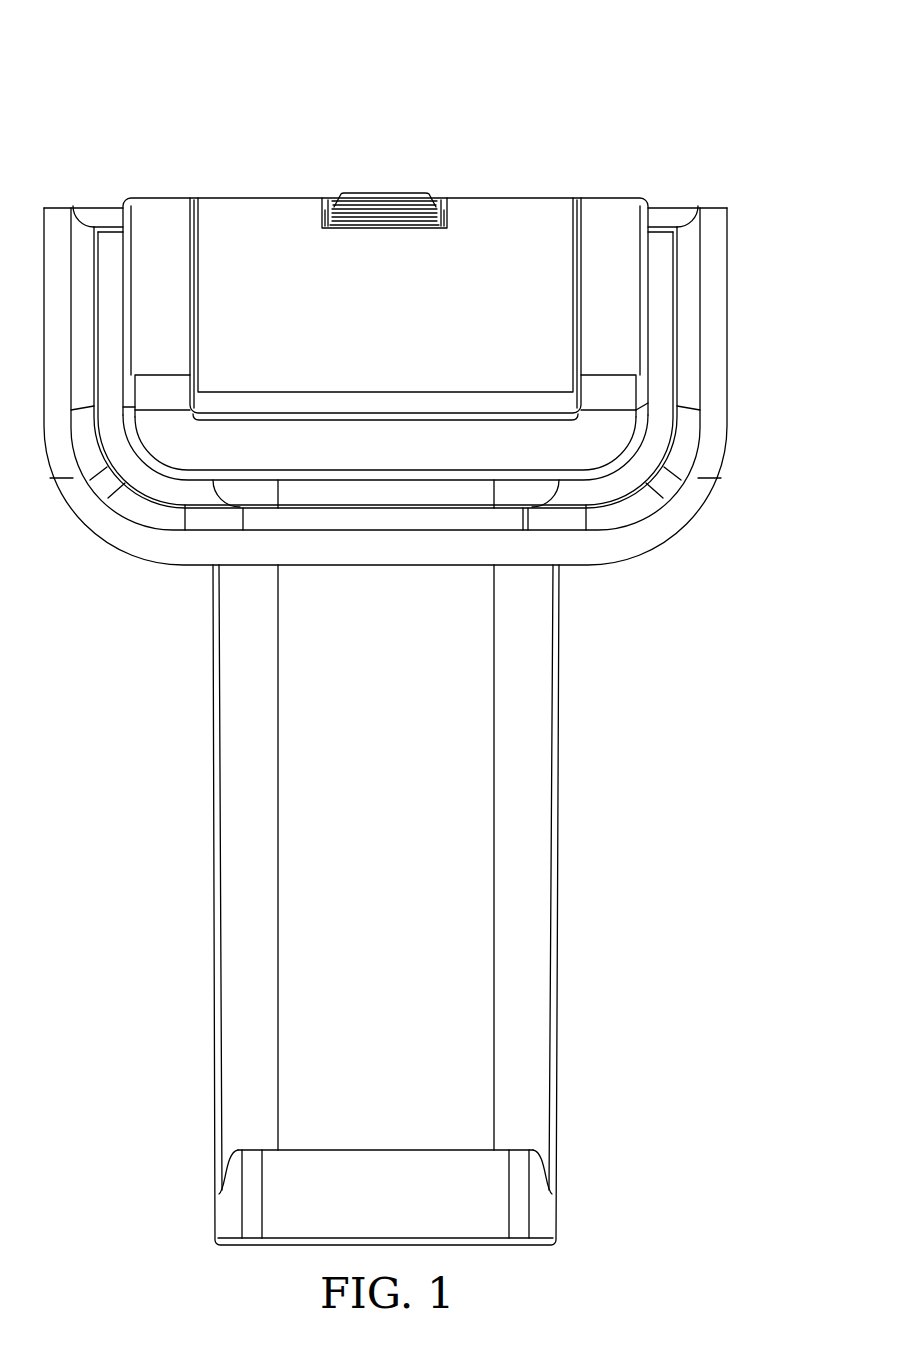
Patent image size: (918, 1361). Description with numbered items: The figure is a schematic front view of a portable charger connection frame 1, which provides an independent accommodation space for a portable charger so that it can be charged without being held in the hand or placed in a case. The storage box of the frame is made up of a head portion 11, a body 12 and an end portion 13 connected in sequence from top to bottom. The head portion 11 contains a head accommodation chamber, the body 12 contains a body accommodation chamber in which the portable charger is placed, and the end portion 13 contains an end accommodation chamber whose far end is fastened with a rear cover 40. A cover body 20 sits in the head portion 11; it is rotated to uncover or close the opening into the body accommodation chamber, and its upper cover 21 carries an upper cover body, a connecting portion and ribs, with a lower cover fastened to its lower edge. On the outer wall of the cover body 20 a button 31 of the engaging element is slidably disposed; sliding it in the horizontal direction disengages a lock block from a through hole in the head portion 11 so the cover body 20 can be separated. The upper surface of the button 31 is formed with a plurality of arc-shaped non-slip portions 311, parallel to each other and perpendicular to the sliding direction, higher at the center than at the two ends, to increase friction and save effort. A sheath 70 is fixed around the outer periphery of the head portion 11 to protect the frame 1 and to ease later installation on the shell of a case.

The portable charger connection frame 1 is at (709, 102).
The head portion 11 is at (647, 203).
The body 12 is at (558, 678).
The end portion 13 is at (527, 1127).
The cover body 20 is at (376, 284).
The upper cover 21 is at (292, 214).
The button 31 is at (427, 181).
The non-slip portions 311 is at (408, 193).
The rear cover 40 is at (527, 1222).
The sheath 70 is at (707, 352).